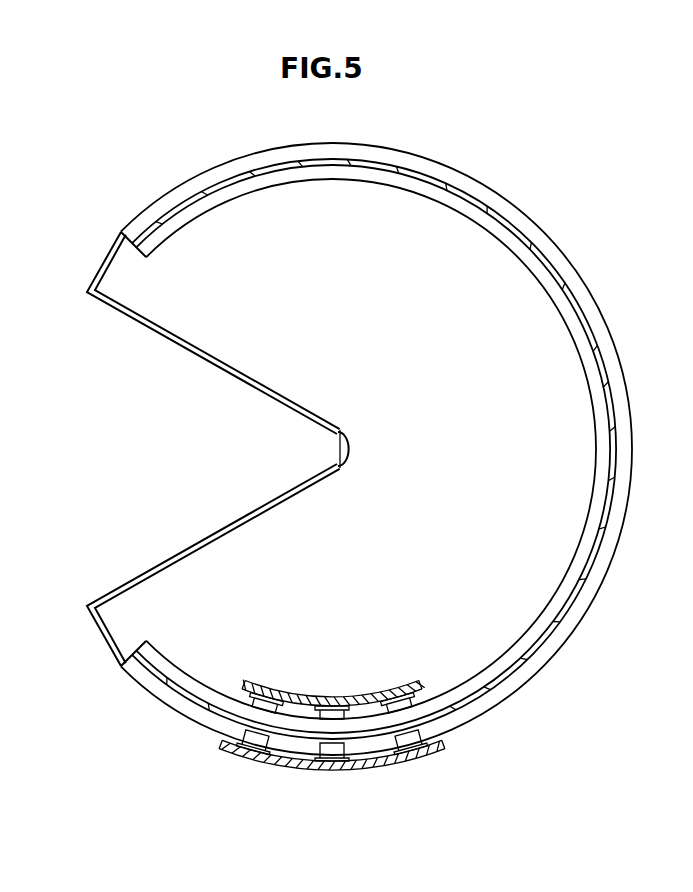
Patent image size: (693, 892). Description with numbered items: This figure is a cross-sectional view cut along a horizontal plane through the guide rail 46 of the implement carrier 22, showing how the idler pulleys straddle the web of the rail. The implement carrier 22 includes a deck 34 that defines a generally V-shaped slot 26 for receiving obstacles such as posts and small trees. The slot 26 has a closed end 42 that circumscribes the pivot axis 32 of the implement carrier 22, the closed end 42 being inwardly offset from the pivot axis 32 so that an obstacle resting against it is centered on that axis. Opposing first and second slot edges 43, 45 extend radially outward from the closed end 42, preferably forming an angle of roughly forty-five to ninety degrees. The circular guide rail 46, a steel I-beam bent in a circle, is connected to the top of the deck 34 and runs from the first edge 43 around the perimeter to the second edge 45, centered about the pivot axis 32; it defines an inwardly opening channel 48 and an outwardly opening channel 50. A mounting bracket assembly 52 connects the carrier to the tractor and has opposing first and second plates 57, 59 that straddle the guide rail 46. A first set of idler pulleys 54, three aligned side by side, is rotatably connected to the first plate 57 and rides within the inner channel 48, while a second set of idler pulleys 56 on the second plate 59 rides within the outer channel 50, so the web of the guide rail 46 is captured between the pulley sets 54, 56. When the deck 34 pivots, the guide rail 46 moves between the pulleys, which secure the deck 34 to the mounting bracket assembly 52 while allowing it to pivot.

The implement carrier 22 is at (530, 120).
The slot 26 is at (115, 451).
The pivot axis 32 is at (334, 449).
The deck 34 is at (350, 303).
The closed end 42 is at (347, 449).
The first slot edge 43 is at (138, 324).
The second slot edge 45 is at (151, 572).
The guide rail 46 is at (421, 173).
The inwardly opening channel 48 is at (598, 437).
The outwardly opening channel 50 is at (640, 445).
The mounting bracket assembly 52 is at (222, 747).
The first set of idler pulleys 54 is at (397, 706).
The second set of idler pulleys 56 is at (432, 750).
The first plate 57 is at (326, 705).
The second plate 59 is at (330, 772).